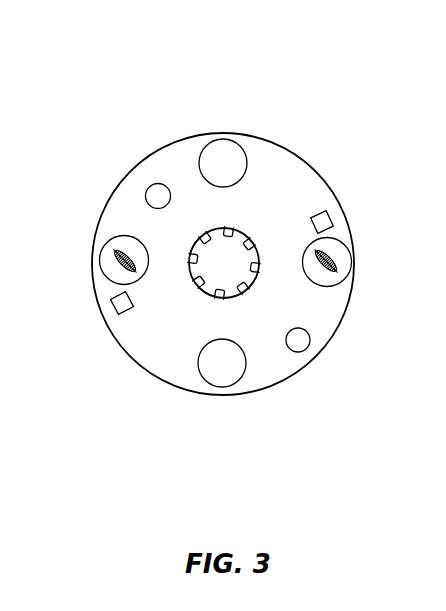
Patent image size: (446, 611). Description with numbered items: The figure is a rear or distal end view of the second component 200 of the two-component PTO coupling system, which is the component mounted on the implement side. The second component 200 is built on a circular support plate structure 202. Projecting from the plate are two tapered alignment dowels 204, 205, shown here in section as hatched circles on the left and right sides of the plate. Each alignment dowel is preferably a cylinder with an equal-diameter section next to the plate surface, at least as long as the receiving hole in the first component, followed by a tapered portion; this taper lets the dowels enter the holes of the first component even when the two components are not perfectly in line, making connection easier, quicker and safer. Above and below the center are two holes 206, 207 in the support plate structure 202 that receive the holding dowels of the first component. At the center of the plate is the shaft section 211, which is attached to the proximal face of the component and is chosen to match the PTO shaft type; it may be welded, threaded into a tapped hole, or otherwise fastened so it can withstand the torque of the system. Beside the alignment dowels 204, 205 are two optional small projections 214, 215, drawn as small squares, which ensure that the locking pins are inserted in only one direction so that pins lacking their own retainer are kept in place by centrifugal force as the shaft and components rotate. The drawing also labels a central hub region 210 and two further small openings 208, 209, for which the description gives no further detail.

The second component 200 is at (138, 107).
The support plate structure 202 is at (307, 160).
The tapered alignment dowel 204 is at (345, 250).
The tapered alignment dowel 205 is at (113, 268).
The hole 206 is at (223, 362).
The hole 207 is at (223, 150).
The small opening 208 is at (298, 338).
The small opening 209 is at (158, 195).
The central hub 210 is at (210, 263).
The shaft section 211 is at (258, 268).
The small projection 214 is at (330, 216).
The small projection 215 is at (116, 311).